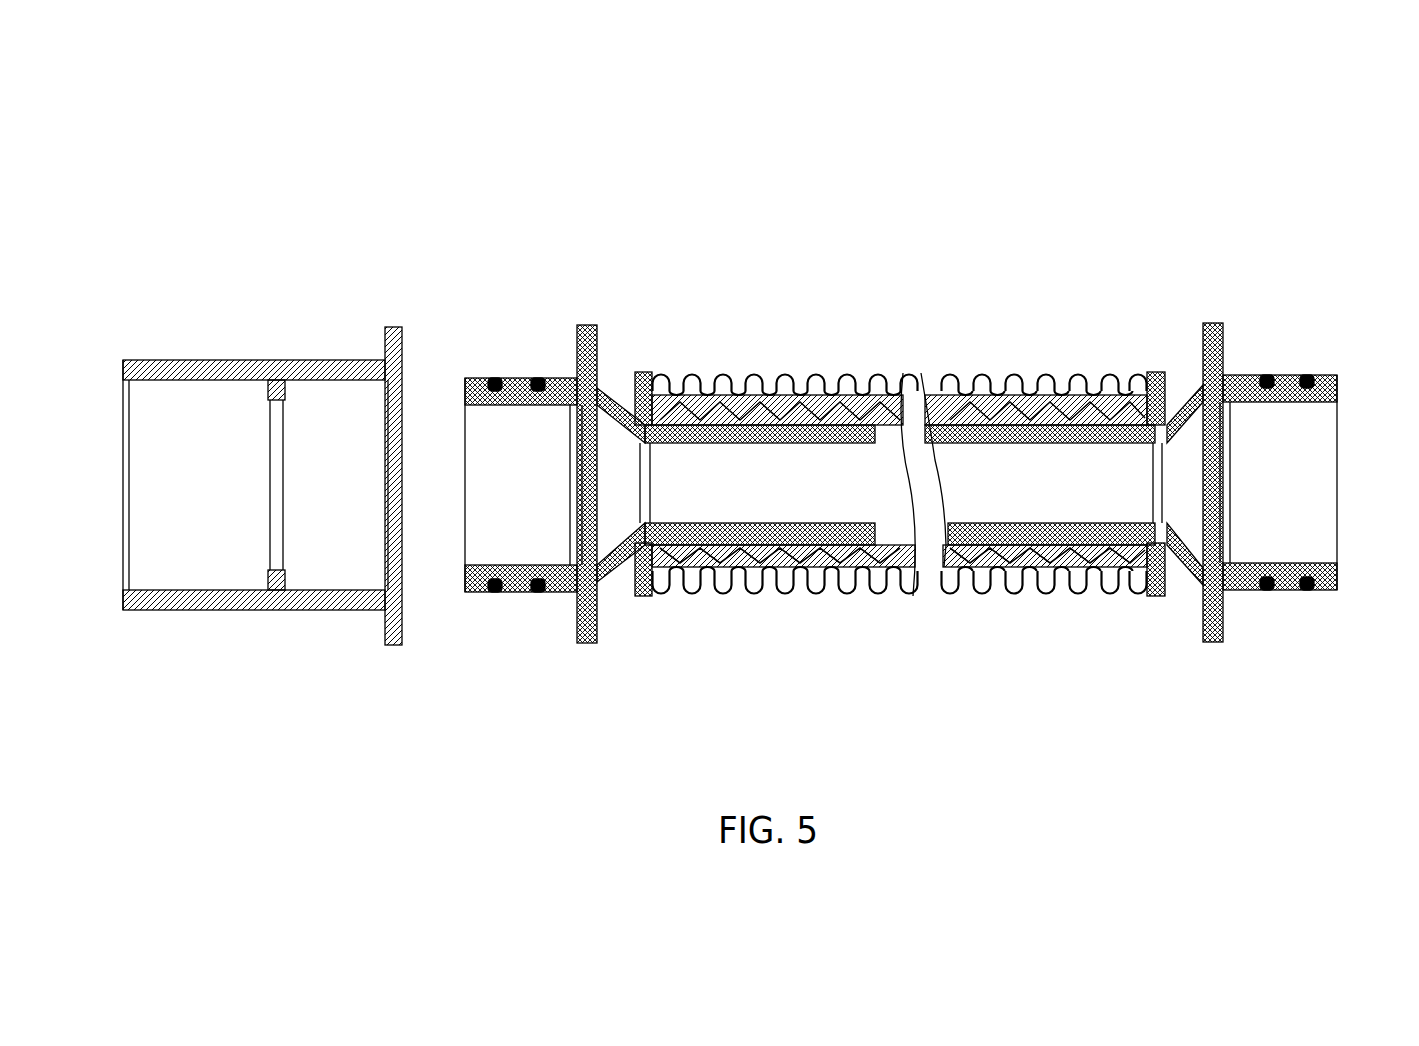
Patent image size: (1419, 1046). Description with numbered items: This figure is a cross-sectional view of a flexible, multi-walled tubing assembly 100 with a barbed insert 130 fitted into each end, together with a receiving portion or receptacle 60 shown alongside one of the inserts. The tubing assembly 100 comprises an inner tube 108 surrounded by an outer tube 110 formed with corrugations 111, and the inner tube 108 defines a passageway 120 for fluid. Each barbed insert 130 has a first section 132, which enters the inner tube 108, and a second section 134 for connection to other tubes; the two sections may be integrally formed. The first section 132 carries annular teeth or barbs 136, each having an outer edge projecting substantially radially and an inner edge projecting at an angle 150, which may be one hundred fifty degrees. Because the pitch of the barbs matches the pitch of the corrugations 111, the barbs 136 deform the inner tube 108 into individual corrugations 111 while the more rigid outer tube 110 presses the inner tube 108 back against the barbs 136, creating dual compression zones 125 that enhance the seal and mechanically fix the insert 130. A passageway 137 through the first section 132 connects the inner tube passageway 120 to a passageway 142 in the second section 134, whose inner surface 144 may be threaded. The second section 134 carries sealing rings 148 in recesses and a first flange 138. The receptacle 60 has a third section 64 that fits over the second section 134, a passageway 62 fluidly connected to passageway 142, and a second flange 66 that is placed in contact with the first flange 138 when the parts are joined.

The receiving portion or receptacle 60 is at (123, 360).
The passageway of receiving portion 62 is at (210, 552).
The third section 64 is at (305, 362).
The second flange 66 is at (393, 327).
The multi-walled tubing assembly 100 is at (965, 236).
The inner tube 108 is at (902, 387).
The outer tube 110 is at (693, 373).
The corrugations 111 is at (690, 593).
The passageway of the inner tube 120 is at (887, 510).
The dual compression zones 125 is at (807, 392).
The barbed insert 130 is at (465, 378).
The first section 132 is at (877, 592).
The second section 134 is at (555, 378).
The teeth or barbs 136 is at (825, 387).
The passageway of first section 137 is at (723, 497).
The first flange 138 is at (587, 325).
The passageway of second section 142 is at (510, 480).
The inner surface 144 is at (525, 567).
The sealing rings 148 is at (538, 592).
The angle 150 is at (860, 387).